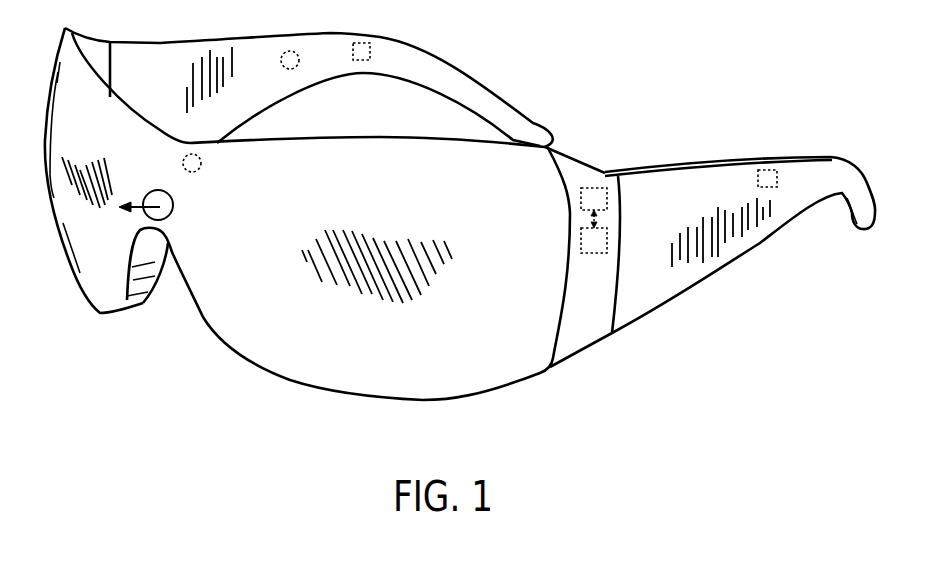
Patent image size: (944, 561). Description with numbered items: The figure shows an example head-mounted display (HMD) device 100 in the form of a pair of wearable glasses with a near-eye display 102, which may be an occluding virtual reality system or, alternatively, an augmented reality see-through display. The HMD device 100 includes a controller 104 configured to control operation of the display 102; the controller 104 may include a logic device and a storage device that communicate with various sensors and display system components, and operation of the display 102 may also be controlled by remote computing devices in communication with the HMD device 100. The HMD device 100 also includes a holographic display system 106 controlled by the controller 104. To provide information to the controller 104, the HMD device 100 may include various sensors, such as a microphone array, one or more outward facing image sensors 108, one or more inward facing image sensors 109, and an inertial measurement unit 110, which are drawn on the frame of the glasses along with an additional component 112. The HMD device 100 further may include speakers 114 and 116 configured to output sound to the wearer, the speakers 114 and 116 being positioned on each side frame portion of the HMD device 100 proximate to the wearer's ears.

The head-mounted display (HMD) device 100 is at (499, 25).
The near-eye display 102 is at (253, 335).
The controller 104 is at (595, 188).
The holographic display system 106 is at (133, 280).
The outward facing image sensor 108 is at (173, 205).
The inward facing image sensor 109 is at (191, 153).
The inertial measurement unit (IMU) 110 is at (607, 240).
The microphone 112 is at (290, 50).
The speaker 114 is at (366, 42).
The speaker 116 is at (768, 170).